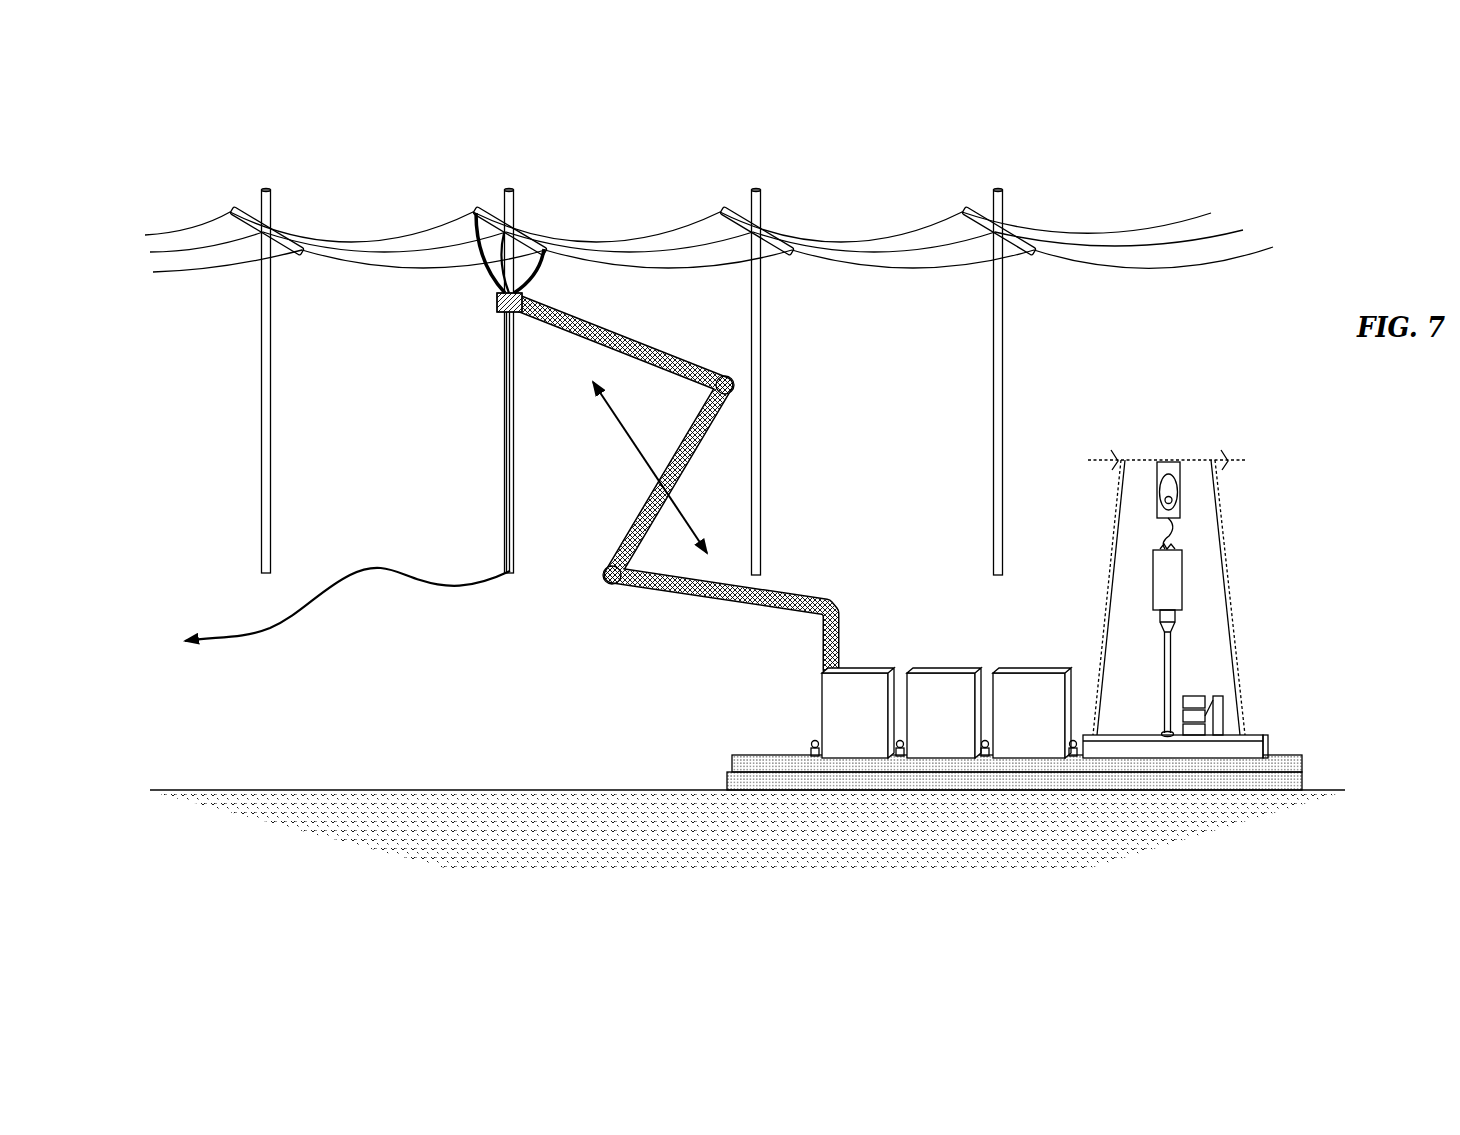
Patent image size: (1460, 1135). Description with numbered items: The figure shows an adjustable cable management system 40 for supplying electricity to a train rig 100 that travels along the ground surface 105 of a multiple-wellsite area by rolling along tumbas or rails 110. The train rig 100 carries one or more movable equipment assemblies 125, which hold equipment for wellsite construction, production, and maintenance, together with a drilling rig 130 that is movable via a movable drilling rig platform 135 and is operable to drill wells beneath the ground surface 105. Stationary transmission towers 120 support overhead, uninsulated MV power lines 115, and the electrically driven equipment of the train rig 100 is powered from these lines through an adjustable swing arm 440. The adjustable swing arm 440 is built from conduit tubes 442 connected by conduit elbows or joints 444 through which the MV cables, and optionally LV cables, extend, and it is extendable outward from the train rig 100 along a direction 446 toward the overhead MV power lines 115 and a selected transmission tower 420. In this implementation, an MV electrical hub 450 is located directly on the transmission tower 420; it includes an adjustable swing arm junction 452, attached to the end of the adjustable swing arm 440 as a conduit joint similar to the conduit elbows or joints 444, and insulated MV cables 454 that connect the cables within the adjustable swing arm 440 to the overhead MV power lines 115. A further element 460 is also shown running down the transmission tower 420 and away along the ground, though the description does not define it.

The adjustable cable management system 40 is at (174, 166).
The train rig 100 is at (1066, 632).
The ground surface 105 is at (160, 786).
The tumbas or rails 110 is at (1303, 775).
The MV power lines 115 is at (1083, 220).
The transmission towers 120 is at (261, 372).
The movable equipment assemblies 125 is at (1035, 664).
The drilling rig 130 is at (1242, 566).
The movable drilling rig platform 135 is at (1265, 734).
The transmission tower 420 is at (513, 190).
The adjustable swing arm 440 is at (644, 520).
The conduit tubes 442 is at (770, 597).
The conduit elbows or joints 444 is at (732, 388).
The direction 446 is at (638, 452).
The MV electrical hub 450 is at (502, 300).
The adjustable swing arm junction 452 is at (497, 311).
The insulated MV cables 454 is at (548, 276).
The cable 460 is at (255, 625).